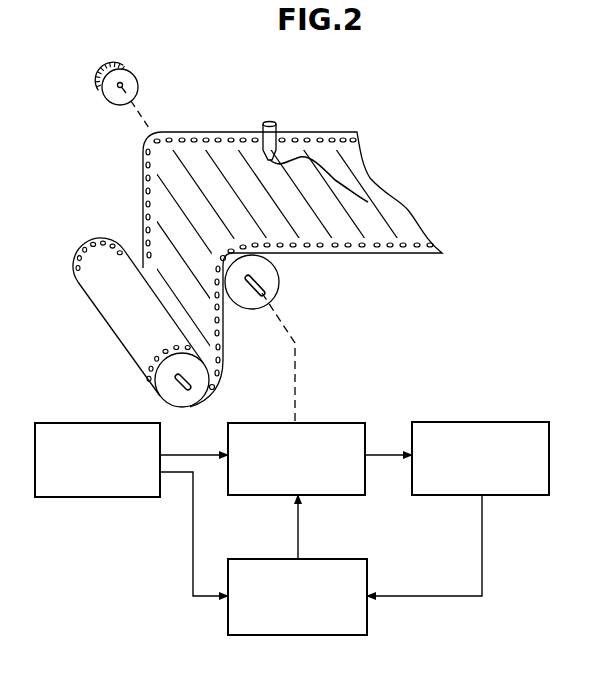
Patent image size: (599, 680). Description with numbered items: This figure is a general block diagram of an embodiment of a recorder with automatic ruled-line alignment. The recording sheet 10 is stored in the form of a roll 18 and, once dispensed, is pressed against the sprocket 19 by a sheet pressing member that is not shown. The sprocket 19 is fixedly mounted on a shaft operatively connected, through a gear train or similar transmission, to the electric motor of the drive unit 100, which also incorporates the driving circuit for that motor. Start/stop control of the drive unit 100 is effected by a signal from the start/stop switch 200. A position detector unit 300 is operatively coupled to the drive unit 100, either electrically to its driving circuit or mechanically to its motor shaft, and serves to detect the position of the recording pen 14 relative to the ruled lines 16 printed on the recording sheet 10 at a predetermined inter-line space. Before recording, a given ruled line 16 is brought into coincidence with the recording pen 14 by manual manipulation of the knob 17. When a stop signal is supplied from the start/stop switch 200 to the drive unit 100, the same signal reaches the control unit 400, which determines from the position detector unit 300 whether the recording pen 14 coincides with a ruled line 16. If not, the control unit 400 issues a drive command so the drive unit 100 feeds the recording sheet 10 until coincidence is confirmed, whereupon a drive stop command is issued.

The recording sheet 10 is at (365, 175).
The recording pen 14 is at (268, 123).
The ruled lines 16 is at (357, 225).
The knob 17 is at (131, 79).
The roll 18 is at (167, 391).
The sprocket 19 is at (272, 287).
The drive unit 100 is at (343, 423).
The start/stop switch 200 is at (92, 497).
The position detector unit 300 is at (497, 422).
The control unit 400 is at (343, 559).